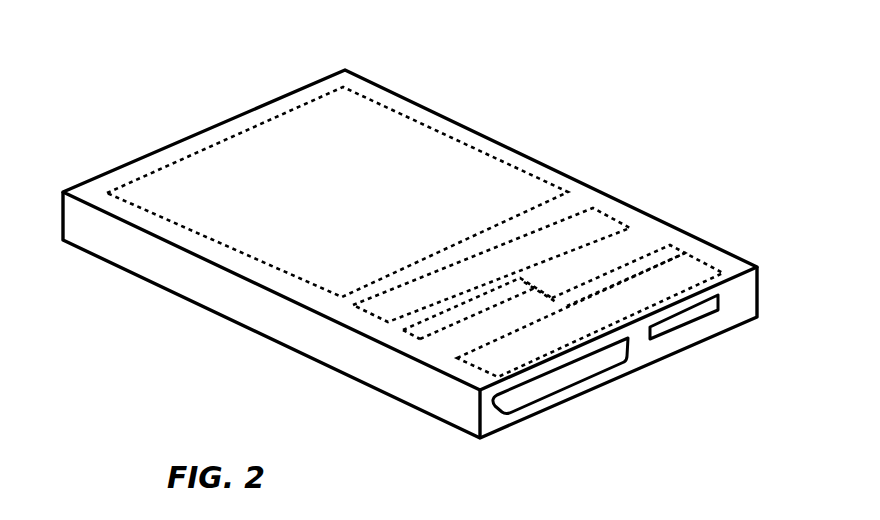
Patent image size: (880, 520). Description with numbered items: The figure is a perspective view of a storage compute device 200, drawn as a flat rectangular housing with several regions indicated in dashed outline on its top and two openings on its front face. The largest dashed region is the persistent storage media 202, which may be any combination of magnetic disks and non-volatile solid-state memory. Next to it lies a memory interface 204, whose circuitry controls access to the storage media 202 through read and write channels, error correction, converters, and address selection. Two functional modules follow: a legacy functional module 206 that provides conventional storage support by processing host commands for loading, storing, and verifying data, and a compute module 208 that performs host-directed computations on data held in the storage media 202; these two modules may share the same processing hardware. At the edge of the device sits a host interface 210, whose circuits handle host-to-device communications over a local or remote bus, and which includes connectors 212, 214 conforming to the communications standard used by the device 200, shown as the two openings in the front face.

The storage compute device 200 is at (237, 323).
The persistent storage media 202 is at (333, 92).
The memory interface 204 is at (593, 210).
The legacy functional module 206 is at (418, 338).
The compute module 208 is at (656, 243).
The host interface 210 is at (708, 268).
The connector 212 is at (570, 387).
The connector 214 is at (688, 320).